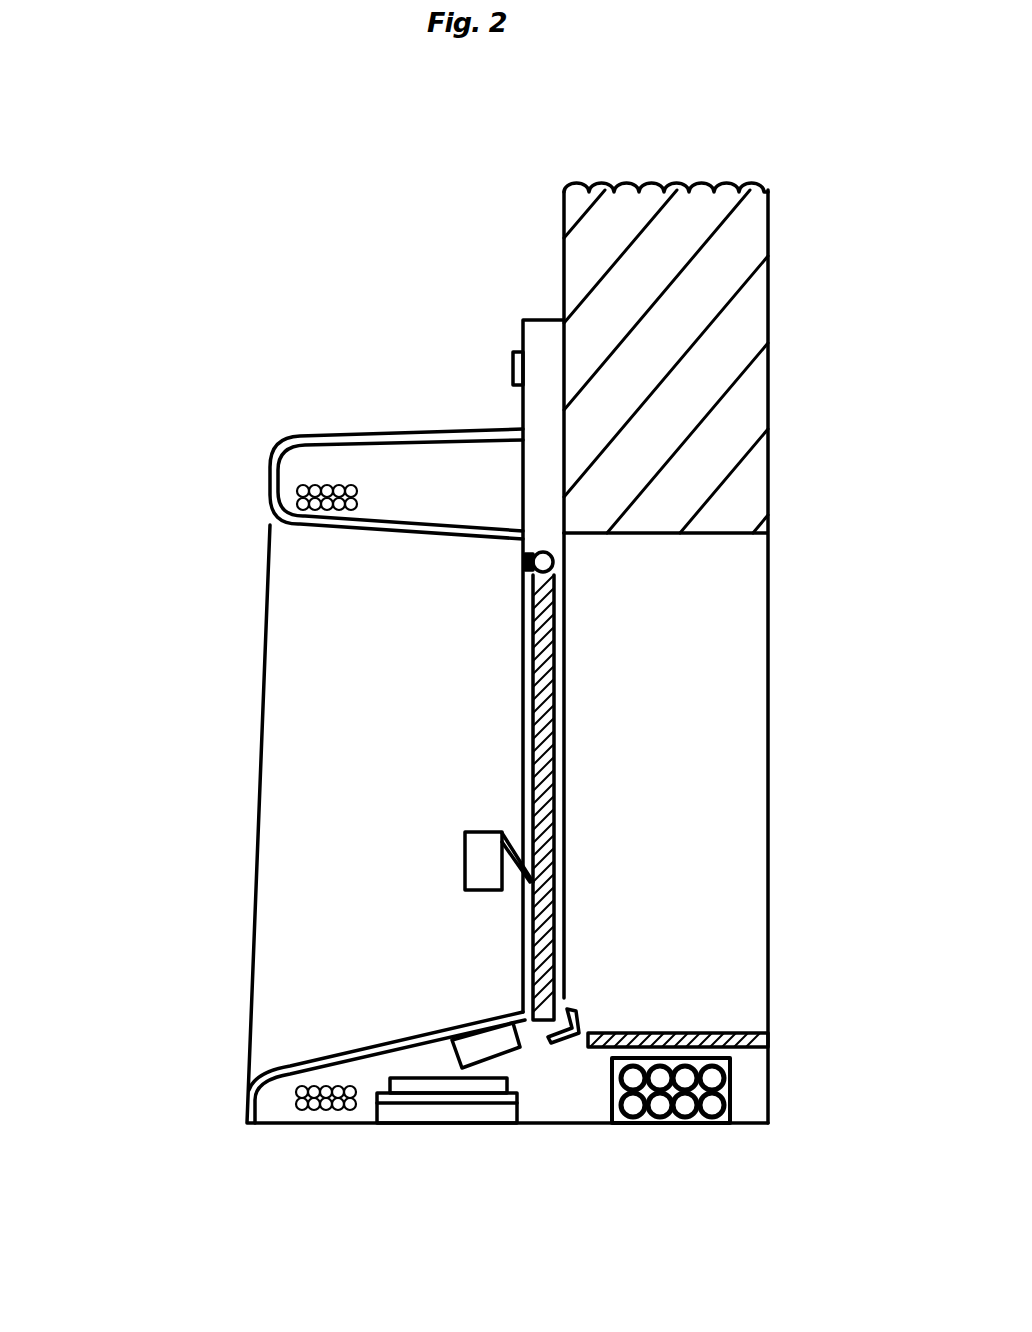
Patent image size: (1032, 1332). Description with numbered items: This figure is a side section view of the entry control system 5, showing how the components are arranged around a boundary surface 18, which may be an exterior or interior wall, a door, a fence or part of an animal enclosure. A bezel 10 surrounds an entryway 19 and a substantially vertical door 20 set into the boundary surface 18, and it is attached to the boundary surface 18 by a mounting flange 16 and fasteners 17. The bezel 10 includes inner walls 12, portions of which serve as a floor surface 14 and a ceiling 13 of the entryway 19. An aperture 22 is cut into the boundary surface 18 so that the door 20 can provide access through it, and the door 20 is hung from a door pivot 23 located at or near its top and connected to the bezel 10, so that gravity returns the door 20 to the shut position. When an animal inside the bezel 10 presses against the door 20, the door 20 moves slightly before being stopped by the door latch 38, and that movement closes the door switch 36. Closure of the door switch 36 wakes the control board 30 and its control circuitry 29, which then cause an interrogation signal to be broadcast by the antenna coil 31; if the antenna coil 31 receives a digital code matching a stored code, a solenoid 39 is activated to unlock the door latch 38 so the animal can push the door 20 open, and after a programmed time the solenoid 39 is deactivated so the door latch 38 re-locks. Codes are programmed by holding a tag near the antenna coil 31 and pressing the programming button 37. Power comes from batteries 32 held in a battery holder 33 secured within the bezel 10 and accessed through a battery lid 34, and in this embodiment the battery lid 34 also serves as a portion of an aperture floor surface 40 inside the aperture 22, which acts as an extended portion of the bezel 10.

The entry control system 5 is at (235, 551).
The bezel 10 is at (265, 432).
The inner walls 12 is at (390, 738).
The ceiling 13 is at (467, 540).
The floor surface 14 is at (365, 1052).
The mounting flange 16 is at (523, 330).
The fasteners 17 is at (513, 368).
The boundary surface 18 is at (563, 225).
The entryway 19 is at (353, 850).
The door 20 is at (535, 645).
The aperture 22 is at (697, 695).
The door pivot 23 is at (553, 565).
The control circuitry 29 is at (440, 1083).
The control board 30 is at (473, 1098).
The antenna coil 31 is at (303, 490).
The batteries 32 is at (658, 1104).
The battery holder 33 is at (730, 1090).
The battery lid 34 is at (698, 1033).
The door switch 36 is at (477, 873).
The programming button 37 is at (427, 1100).
The door latch 38 is at (557, 1036).
The solenoid 39 is at (497, 1047).
The aperture floor surface 40 is at (650, 1032).